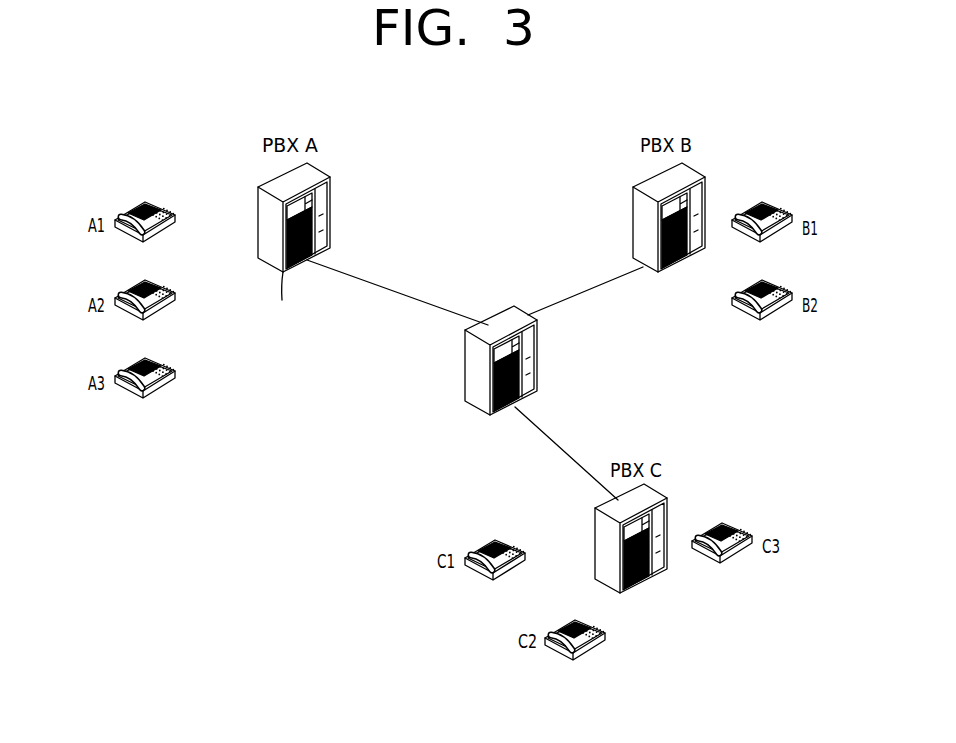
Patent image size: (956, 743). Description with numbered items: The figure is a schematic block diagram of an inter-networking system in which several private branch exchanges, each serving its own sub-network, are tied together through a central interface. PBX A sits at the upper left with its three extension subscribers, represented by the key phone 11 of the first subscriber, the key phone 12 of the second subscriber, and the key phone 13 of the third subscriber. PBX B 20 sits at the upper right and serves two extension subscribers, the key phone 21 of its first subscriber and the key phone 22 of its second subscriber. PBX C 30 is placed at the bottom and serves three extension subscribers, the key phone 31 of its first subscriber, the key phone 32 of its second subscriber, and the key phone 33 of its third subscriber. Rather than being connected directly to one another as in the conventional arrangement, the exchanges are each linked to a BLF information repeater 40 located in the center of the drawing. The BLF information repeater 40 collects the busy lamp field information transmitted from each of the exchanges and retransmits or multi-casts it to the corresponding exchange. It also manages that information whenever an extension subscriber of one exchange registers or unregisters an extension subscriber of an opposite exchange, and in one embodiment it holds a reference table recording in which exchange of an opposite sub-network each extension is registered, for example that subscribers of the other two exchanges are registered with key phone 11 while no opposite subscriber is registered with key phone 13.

The key phone 11 is at (165, 205).
The key phone 12 is at (165, 283).
The key phone 13 is at (165, 361).
The PBX B 20 is at (682, 262).
The key phone 21 is at (782, 205).
The key phone 22 is at (782, 285).
The PBX C 30 is at (643, 583).
The key phone 31 is at (515, 543).
The key phone 32 is at (590, 653).
The key phone 33 is at (742, 526).
The BLF information repeater 40 is at (490, 418).